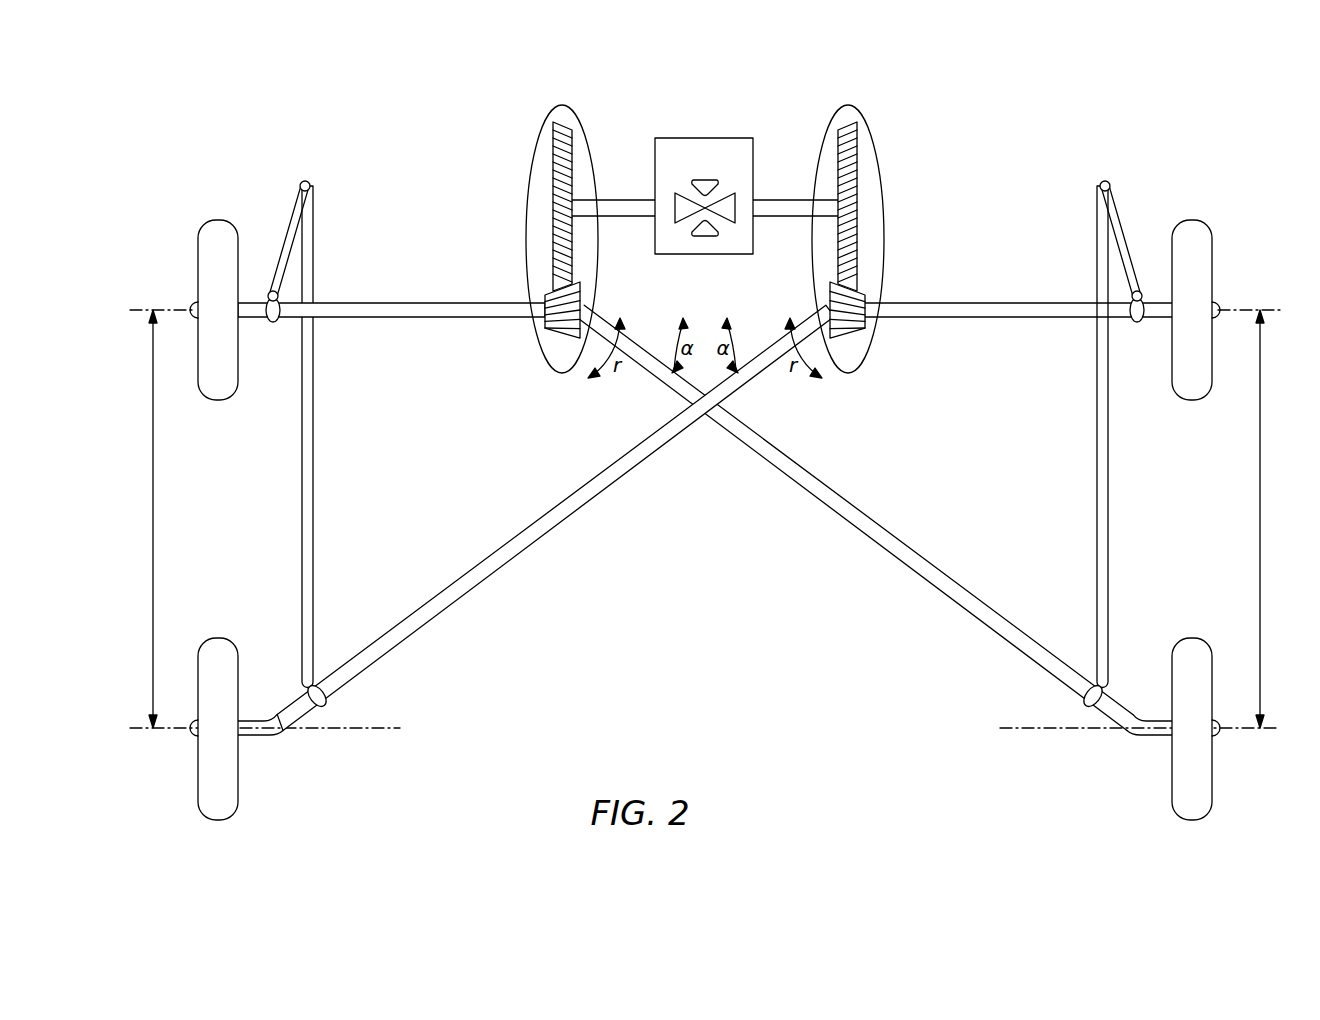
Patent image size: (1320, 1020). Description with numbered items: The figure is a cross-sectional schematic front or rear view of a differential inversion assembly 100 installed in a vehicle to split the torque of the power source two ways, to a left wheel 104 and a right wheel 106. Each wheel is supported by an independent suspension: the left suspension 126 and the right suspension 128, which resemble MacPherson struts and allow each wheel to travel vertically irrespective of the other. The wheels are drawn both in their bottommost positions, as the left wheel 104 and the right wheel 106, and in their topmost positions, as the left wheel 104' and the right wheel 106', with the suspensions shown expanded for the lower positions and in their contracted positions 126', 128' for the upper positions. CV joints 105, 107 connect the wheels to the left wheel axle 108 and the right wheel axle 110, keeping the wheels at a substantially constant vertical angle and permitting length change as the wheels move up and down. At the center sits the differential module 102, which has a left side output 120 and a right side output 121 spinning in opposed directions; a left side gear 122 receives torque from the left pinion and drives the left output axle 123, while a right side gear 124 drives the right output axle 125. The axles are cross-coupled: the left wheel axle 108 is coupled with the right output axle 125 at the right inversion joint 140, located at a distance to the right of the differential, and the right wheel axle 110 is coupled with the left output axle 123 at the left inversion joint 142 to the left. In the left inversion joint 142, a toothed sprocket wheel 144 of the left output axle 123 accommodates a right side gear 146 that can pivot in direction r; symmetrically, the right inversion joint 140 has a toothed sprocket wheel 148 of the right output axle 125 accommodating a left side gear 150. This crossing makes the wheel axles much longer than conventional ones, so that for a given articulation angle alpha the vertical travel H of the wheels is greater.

The differential inversion assembly 100 is at (270, 103).
The differential module 102 is at (705, 138).
The left wheel 104 is at (183, 729).
The left wheel in topmost position 104' is at (182, 310).
The CV joint 105 is at (258, 318).
The right wheel 106 is at (1226, 729).
The right wheel in topmost position 106' is at (1228, 310).
The CV joint 107 is at (1150, 318).
The left wheel axle 108 is at (402, 318).
The right wheel axle 110 is at (990, 318).
The left side output 120 is at (692, 197).
The right side output 121 is at (718, 197).
The left side gear 122 is at (678, 198).
The left output axle 123 is at (630, 217).
The right side gear 124 is at (732, 198).
The right output axle 125 is at (780, 217).
The left suspension 126 is at (343, 437).
The left suspension in contracted position 126' is at (268, 233).
The right suspension 128 is at (1068, 437).
The right suspension in contracted position 128' is at (1143, 233).
The right inversion joint 140 is at (853, 106).
The left inversion joint 142 is at (567, 106).
The toothed sprocket wheel 144 is at (552, 177).
The right side gear 146 is at (560, 341).
The toothed sprocket wheel 148 is at (858, 177).
The left side gear 150 is at (850, 341).